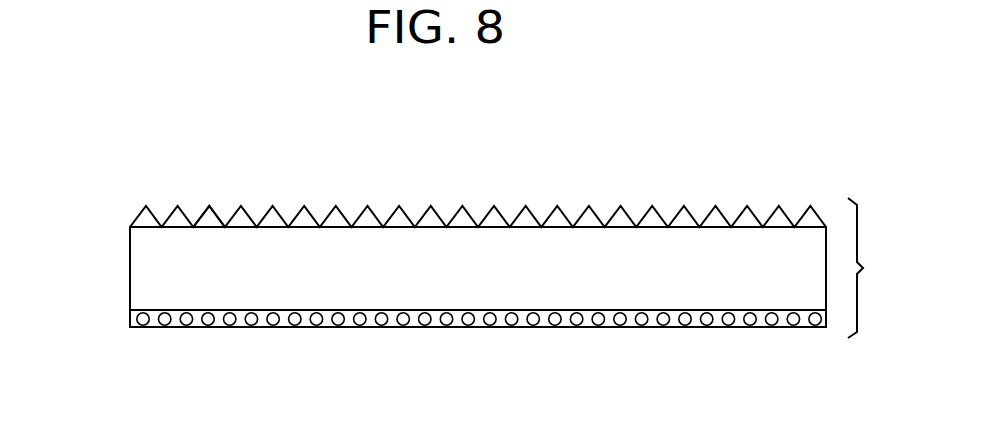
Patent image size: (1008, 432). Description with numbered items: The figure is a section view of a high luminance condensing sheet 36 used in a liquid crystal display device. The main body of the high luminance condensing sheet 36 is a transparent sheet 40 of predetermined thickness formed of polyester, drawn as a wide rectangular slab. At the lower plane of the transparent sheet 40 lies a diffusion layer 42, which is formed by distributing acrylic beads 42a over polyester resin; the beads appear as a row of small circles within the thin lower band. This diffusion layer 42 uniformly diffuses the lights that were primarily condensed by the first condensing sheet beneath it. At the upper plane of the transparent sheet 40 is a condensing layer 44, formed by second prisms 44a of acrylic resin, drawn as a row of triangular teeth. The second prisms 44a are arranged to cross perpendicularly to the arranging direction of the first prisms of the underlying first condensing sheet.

The high luminance condensing sheet 36 is at (877, 268).
The transparent sheet 40 is at (137, 273).
The diffusion layer 42 is at (127, 325).
The acrylic beads 42a is at (130, 317).
The condensing layer 44 is at (127, 220).
The second prisms 44a is at (208, 207).